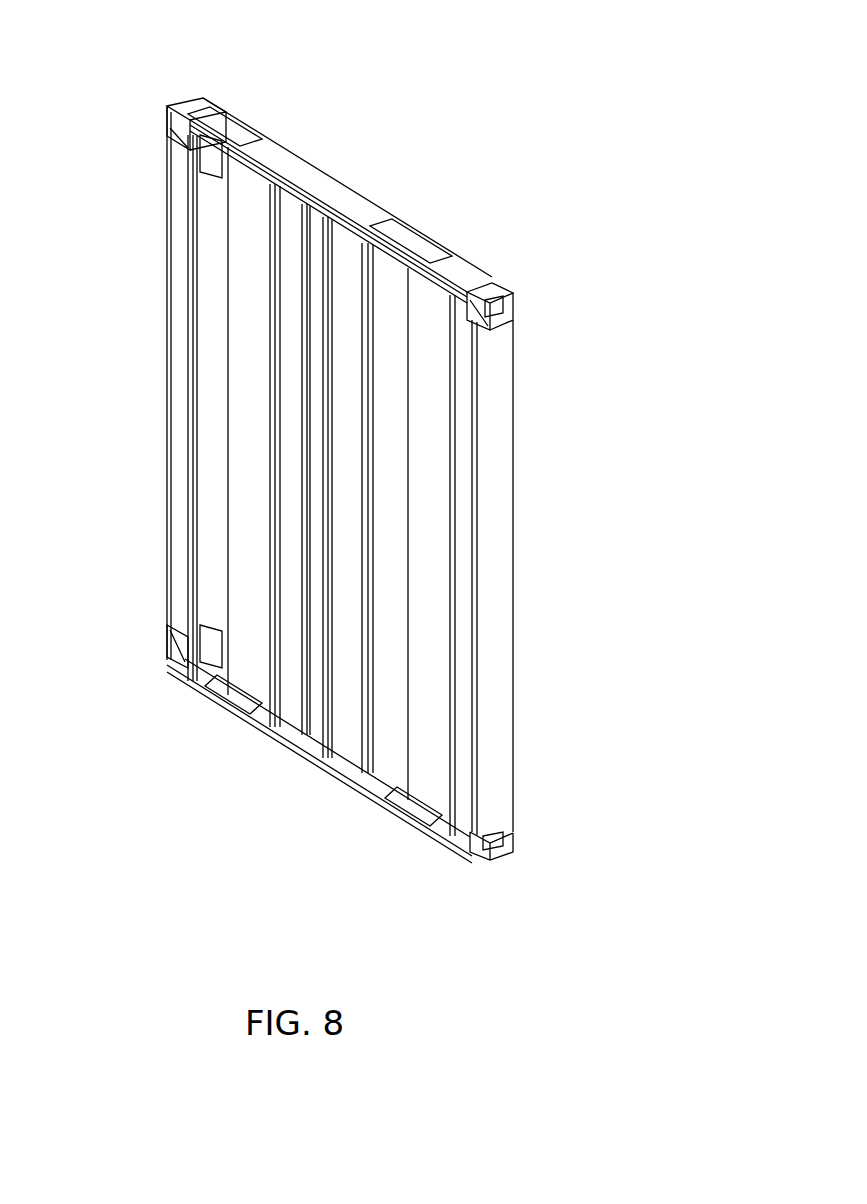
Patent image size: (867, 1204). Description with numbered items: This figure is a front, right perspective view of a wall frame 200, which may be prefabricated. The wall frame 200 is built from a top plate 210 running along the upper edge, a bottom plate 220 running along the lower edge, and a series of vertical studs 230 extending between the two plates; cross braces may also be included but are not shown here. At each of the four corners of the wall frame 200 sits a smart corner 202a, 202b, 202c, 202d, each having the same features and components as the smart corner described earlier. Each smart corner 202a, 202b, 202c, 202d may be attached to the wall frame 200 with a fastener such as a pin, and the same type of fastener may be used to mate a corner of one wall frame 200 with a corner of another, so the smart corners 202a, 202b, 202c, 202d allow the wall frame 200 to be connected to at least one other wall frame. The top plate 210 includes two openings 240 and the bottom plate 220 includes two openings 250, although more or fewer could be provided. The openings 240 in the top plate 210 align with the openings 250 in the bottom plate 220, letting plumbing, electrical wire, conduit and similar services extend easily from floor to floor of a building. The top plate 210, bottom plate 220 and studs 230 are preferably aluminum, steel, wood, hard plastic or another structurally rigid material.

The wall frame 200 is at (350, 82).
The top plate 210 is at (355, 200).
The bottom plate 220 is at (300, 747).
The vertical studs 230 is at (215, 348).
The opening 240 is at (260, 150).
The opening 250 is at (240, 697).
The smart corner 202a is at (497, 295).
The smart corner 202b is at (490, 845).
The smart corner 202c is at (172, 128).
The smart corner 202d is at (167, 658).